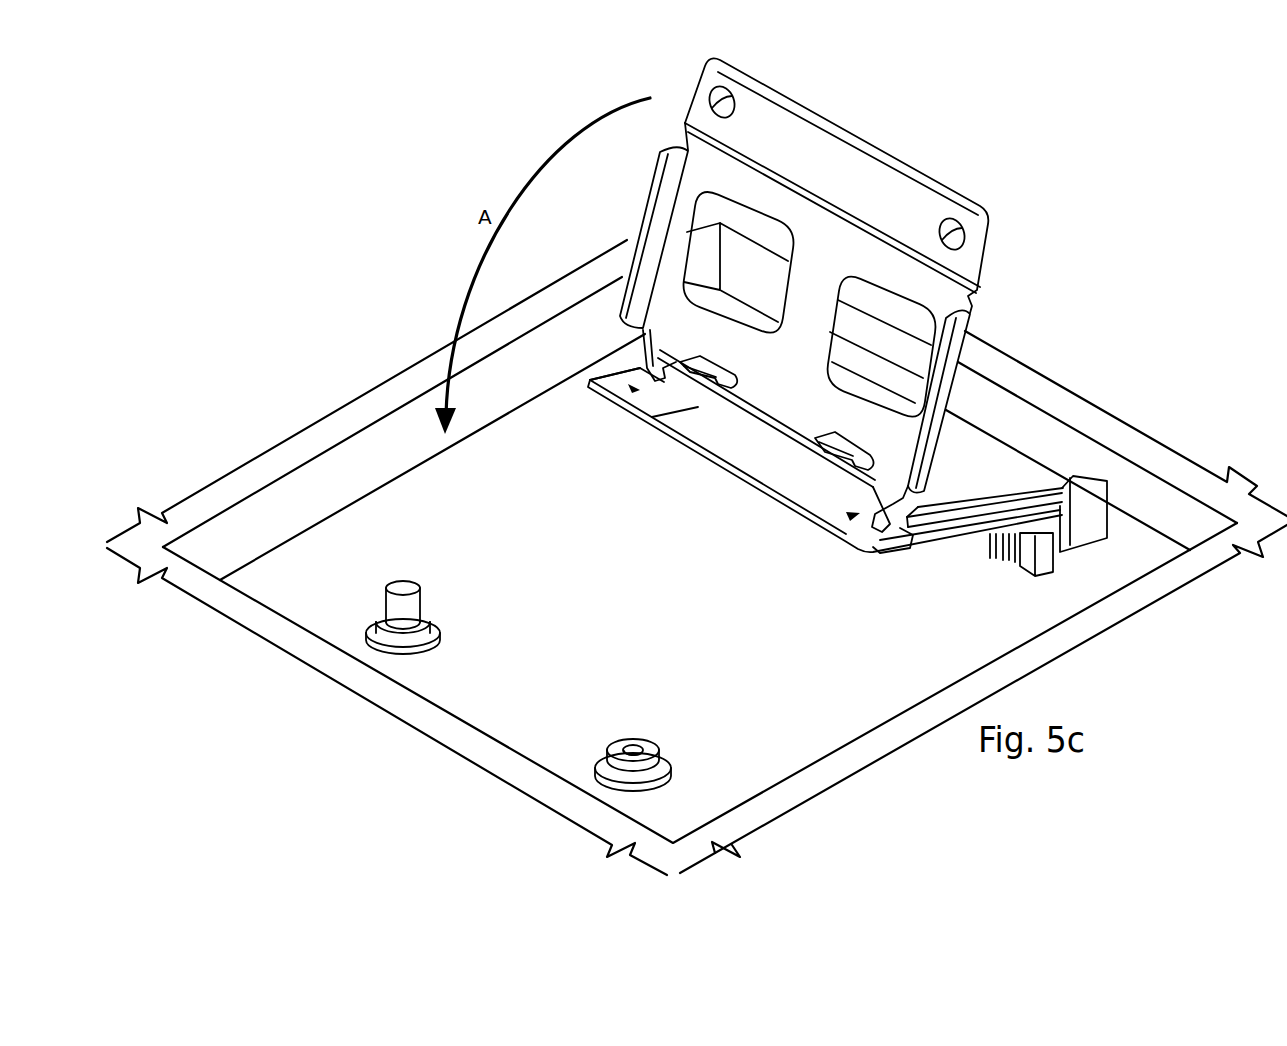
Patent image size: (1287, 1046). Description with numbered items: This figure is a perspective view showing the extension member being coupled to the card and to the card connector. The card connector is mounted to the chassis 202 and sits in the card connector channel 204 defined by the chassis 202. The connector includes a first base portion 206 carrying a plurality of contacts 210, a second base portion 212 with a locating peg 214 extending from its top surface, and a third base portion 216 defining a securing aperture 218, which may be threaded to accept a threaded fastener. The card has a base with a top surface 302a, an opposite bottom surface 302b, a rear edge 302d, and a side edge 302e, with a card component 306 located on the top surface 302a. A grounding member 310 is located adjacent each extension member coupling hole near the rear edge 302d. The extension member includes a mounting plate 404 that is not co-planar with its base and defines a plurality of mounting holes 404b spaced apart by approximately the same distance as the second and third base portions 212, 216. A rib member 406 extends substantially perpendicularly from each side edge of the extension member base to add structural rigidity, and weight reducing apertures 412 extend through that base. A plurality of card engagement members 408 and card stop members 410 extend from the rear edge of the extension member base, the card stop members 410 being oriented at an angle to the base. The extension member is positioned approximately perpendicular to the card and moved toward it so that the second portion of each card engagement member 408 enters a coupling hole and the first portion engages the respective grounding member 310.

The chassis 202 is at (320, 437).
The card connector channel 204 is at (623, 611).
The first base portion 206 is at (1033, 460).
The contacts 210 is at (1053, 540).
The second base portion 212 is at (377, 630).
The locating peg 214 is at (403, 585).
The third base portion 216 is at (663, 757).
The securing aperture 218 is at (633, 745).
The top surface 302a is at (717, 447).
The bottom surface 302b is at (781, 494).
The rear edge 302d is at (748, 478).
The side edge 302e is at (940, 538).
The card component 306 is at (1003, 487).
The grounding member 310 is at (617, 376).
The mounting plate 404 is at (843, 150).
The mounting holes 404b is at (712, 102).
The rib member 406 is at (647, 220).
The card engagement members 408 is at (633, 393).
The card stop members 410 is at (713, 365).
The weight reducing apertures 412 is at (745, 200).